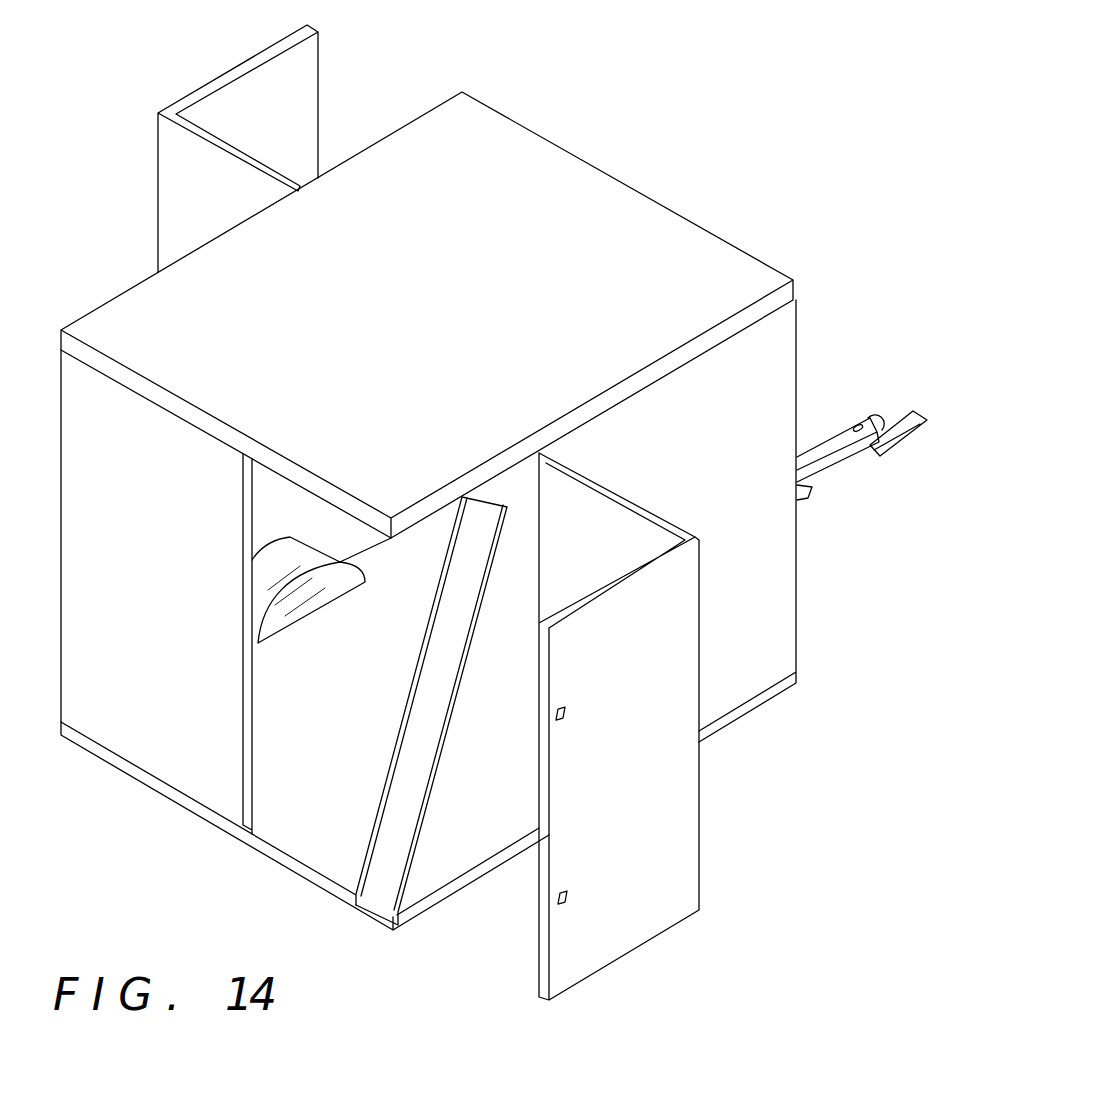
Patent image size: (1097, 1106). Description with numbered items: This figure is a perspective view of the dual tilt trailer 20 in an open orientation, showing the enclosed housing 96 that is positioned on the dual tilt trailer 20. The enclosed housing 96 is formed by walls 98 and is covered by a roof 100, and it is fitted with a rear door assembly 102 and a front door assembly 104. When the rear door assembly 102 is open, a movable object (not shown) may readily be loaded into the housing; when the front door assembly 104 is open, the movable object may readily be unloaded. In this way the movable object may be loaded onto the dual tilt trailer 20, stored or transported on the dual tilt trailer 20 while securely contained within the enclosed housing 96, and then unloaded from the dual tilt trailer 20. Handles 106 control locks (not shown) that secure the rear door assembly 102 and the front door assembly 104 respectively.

The dual tilt trailer 20 is at (734, 722).
The enclosed housing 96 is at (724, 237).
The walls 98 is at (182, 757).
The roof 100 is at (512, 145).
The rear door assembly 102 is at (652, 940).
The front door assembly 104 is at (236, 66).
The handles 106 is at (556, 901).